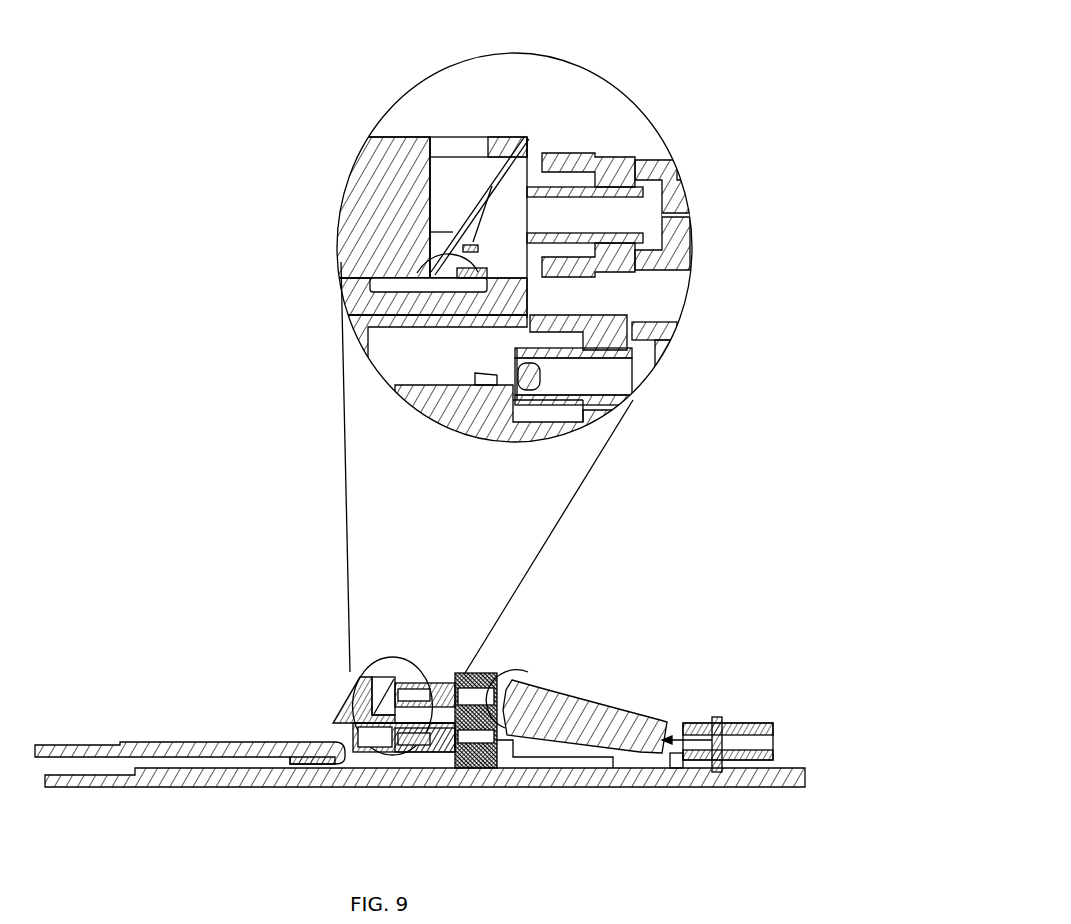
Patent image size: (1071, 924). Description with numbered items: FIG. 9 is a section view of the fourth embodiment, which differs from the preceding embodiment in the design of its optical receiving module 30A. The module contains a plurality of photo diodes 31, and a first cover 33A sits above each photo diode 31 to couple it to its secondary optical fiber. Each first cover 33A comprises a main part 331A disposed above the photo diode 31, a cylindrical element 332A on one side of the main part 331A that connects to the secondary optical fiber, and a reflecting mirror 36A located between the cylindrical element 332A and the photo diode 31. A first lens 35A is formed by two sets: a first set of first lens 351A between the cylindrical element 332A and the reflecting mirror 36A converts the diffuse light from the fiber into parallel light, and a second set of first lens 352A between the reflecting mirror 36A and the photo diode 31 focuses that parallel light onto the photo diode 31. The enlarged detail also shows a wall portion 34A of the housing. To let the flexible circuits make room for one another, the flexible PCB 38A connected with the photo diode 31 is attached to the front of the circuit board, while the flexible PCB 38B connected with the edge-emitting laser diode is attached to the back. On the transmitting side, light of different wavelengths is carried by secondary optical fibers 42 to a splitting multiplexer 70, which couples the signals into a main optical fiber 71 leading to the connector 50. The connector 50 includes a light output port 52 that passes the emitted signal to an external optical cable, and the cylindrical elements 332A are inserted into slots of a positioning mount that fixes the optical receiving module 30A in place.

The optical receiving module 30A is at (405, 126).
The top wall 34A is at (460, 152).
The second set of first lens 352A is at (527, 137).
The first set of first lens 351A is at (527, 224).
The first lens 35A is at (600, 177).
The cylindrical element 332A is at (662, 210).
The main part 331A is at (445, 254).
The first cover 33A is at (458, 201).
The reflecting mirror 36A is at (430, 232).
The photo diode 31 is at (353, 293).
The flexible PCB 38A is at (345, 743).
The flexible PCB 38B is at (300, 764).
The secondary optical fiber 42 is at (508, 684).
The splitting multiplexer 70 is at (597, 730).
The main optical fiber 71 is at (683, 723).
The light output port 52 is at (757, 723).
The connector 50 is at (753, 772).